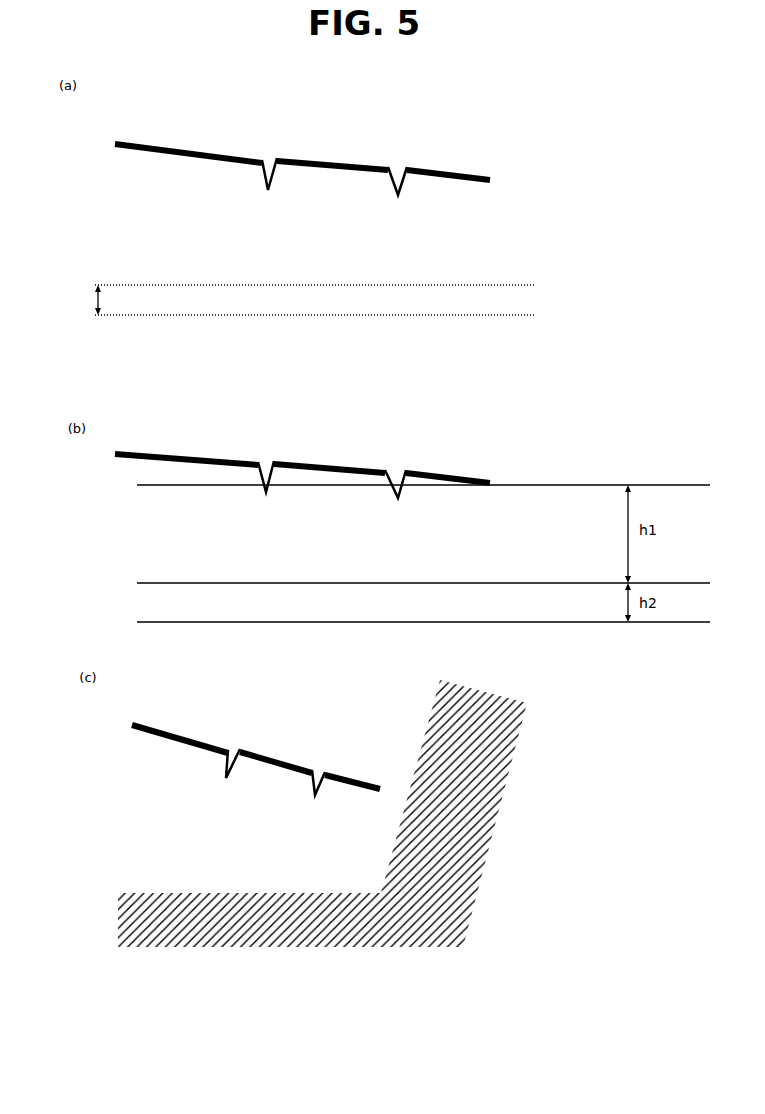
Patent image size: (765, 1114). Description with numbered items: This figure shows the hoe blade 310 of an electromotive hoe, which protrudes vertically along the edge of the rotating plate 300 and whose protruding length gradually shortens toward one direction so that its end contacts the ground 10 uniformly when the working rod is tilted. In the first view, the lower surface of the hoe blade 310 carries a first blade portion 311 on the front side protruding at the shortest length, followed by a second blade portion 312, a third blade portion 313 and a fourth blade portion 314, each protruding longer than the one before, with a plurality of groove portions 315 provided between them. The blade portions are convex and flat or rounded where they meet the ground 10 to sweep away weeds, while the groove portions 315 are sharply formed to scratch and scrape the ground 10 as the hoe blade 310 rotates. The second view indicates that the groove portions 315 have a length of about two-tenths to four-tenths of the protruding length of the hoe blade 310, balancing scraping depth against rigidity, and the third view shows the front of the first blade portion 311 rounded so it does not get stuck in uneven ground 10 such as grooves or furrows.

The ground 10 is at (485, 305).
The rotating plate 300 is at (114, 150).
The hoe blade 310 is at (120, 222).
The first blade portion 311 is at (450, 297).
The second blade portion 312 is at (362, 307).
The third blade portion 313 is at (270, 307).
The fourth blade portion 314 is at (182, 307).
The groove portions 315 is at (236, 292).